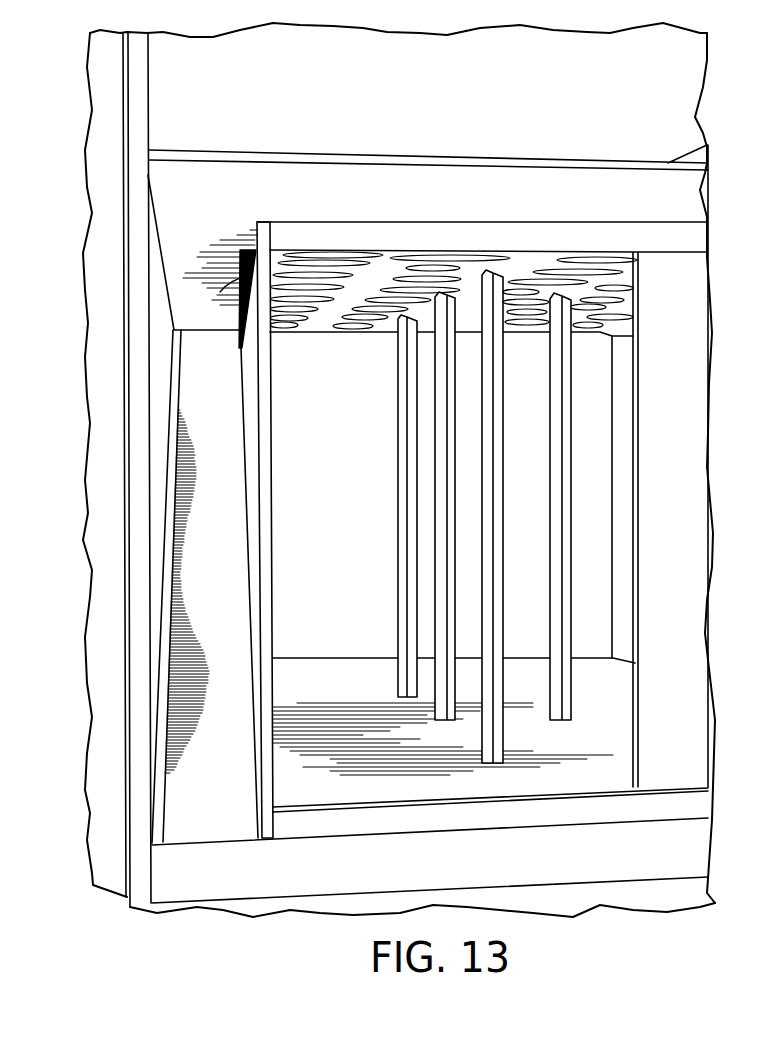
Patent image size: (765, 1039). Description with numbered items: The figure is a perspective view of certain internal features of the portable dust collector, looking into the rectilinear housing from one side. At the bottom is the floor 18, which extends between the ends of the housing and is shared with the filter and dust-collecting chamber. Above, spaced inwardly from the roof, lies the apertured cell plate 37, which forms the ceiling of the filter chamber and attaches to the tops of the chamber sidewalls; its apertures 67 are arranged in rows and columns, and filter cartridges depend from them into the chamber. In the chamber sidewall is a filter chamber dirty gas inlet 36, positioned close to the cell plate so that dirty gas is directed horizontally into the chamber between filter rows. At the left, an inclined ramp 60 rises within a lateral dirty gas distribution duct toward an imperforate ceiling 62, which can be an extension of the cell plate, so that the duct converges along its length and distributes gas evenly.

The floor 18 is at (597, 700).
The filter chamber dirty gas inlet 36 is at (250, 257).
The apertured cell plate 37 is at (605, 278).
The inclined ramp 60 is at (204, 810).
The imperforate ceiling 62 is at (183, 253).
The aperture 67 is at (443, 253).